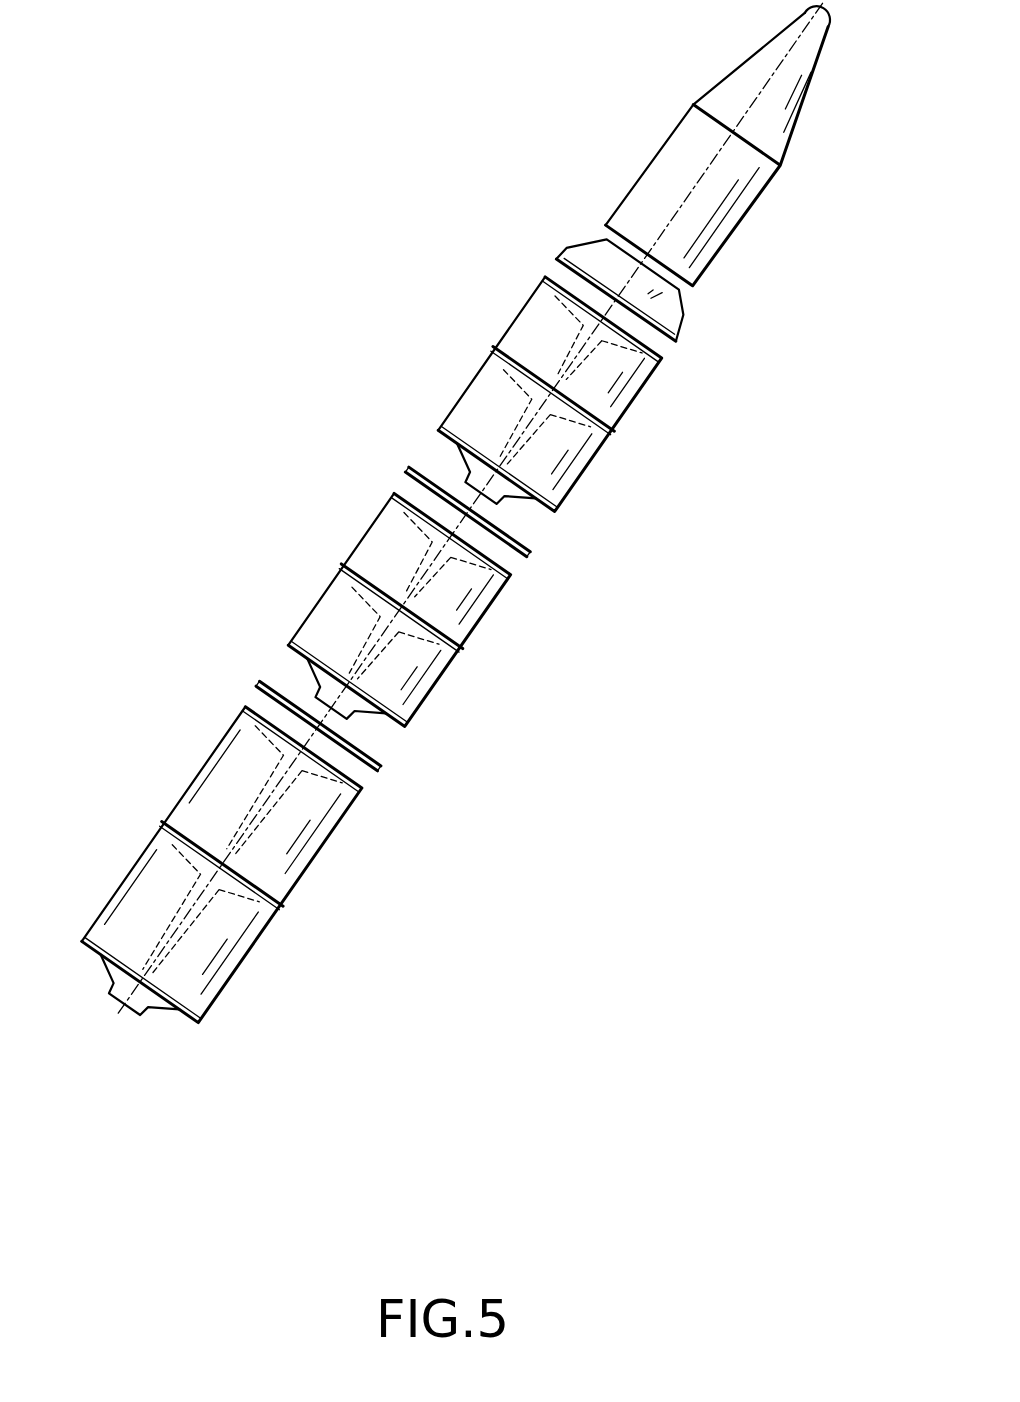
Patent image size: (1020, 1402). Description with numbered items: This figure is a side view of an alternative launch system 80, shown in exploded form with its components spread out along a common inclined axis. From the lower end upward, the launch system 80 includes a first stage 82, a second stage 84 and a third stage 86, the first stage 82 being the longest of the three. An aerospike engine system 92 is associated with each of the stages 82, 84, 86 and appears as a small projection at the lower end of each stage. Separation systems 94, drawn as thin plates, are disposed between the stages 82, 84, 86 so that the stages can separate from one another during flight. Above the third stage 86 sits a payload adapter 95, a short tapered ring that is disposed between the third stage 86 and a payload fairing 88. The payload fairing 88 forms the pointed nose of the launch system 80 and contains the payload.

The launch system 80 is at (542, 140).
The first stage 82 is at (320, 857).
The second stage 84 is at (465, 643).
The third stage 86 is at (607, 448).
The payload fairing 88 is at (742, 223).
The aerospike engine system 92 is at (503, 497).
The separation systems 94 is at (410, 472).
The payload adapter 95 is at (563, 252).